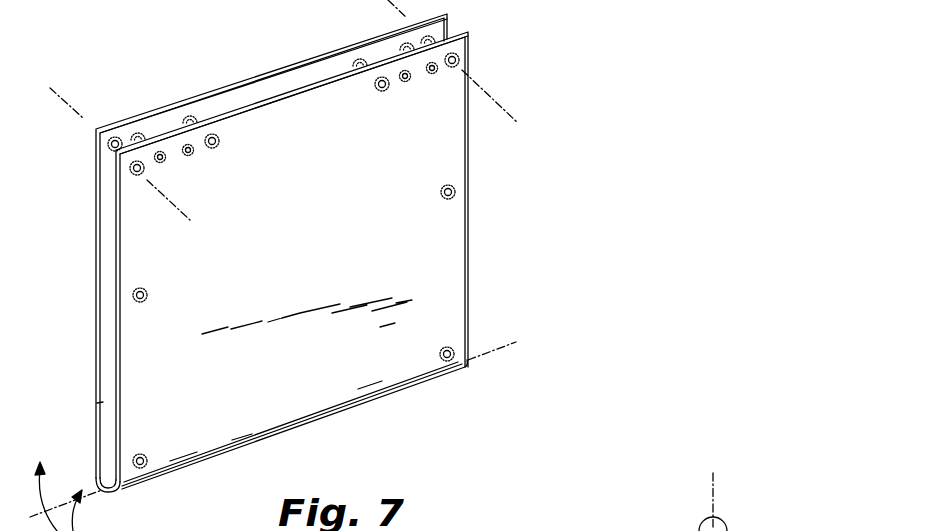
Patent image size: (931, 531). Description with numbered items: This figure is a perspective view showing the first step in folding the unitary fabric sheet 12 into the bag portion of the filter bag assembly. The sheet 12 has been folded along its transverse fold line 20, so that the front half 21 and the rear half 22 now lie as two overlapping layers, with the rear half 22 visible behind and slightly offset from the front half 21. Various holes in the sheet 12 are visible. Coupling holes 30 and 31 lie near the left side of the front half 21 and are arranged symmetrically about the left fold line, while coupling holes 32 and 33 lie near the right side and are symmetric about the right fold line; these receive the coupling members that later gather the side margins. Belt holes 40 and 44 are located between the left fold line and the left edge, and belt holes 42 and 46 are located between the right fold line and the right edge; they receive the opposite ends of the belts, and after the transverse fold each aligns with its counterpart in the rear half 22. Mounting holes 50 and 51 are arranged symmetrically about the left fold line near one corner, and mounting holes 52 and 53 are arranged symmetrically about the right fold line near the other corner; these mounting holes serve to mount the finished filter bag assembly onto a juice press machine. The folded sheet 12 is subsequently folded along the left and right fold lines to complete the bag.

The fabric sheet 12 is at (565, 170).
The transverse fold line 20 is at (516, 342).
The front half 21 is at (286, 262).
The rear half 22 is at (94, 300).
The coupling hole 30 is at (162, 154).
The coupling hole 31 is at (192, 147).
The coupling hole 32 is at (405, 81).
The coupling hole 33 is at (432, 73).
The belt hole 40 is at (141, 467).
The belt hole 42 is at (447, 360).
The belt hole 44 is at (142, 299).
The belt hole 46 is at (449, 198).
The mounting hole 50 is at (135, 173).
The mounting hole 51 is at (212, 148).
The mounting hole 52 is at (382, 90).
The mounting hole 53 is at (460, 59).